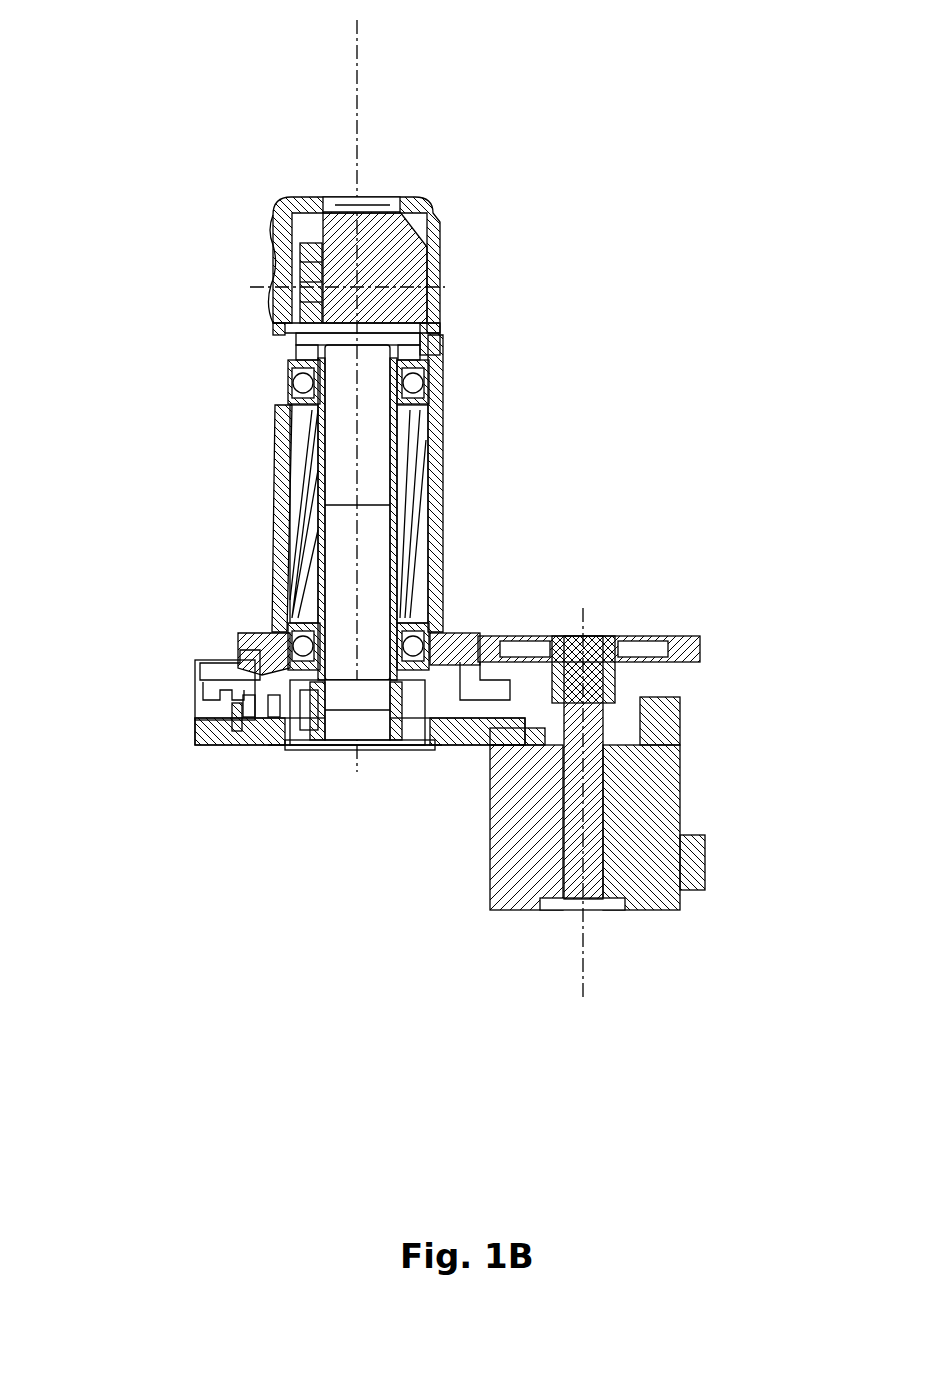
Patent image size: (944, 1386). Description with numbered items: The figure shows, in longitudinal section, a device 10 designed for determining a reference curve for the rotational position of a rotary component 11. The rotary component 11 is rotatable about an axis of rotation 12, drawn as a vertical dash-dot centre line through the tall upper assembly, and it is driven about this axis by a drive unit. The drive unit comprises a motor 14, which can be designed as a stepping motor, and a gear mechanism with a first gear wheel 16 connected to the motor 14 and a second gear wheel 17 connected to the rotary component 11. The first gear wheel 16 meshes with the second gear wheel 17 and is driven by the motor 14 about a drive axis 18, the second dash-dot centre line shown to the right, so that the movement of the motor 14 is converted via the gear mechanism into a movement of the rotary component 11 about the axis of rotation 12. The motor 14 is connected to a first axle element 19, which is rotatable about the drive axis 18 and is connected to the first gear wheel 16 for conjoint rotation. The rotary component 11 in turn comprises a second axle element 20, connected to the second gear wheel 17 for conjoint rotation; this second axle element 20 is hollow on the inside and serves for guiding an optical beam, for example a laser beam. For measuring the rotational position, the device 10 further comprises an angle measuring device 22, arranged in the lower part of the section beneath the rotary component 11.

The device 10 is at (145, 678).
The rotary component 11 is at (490, 248).
The axis of rotation 12 is at (355, 61).
The motor 14 is at (660, 805).
The first gear wheel 16 is at (702, 648).
The second gear wheel 17 is at (256, 648).
The drive axis 18 is at (583, 973).
The first axle element 19 is at (562, 844).
The second axle element 20 is at (310, 482).
The angle measuring device 22 is at (322, 777).